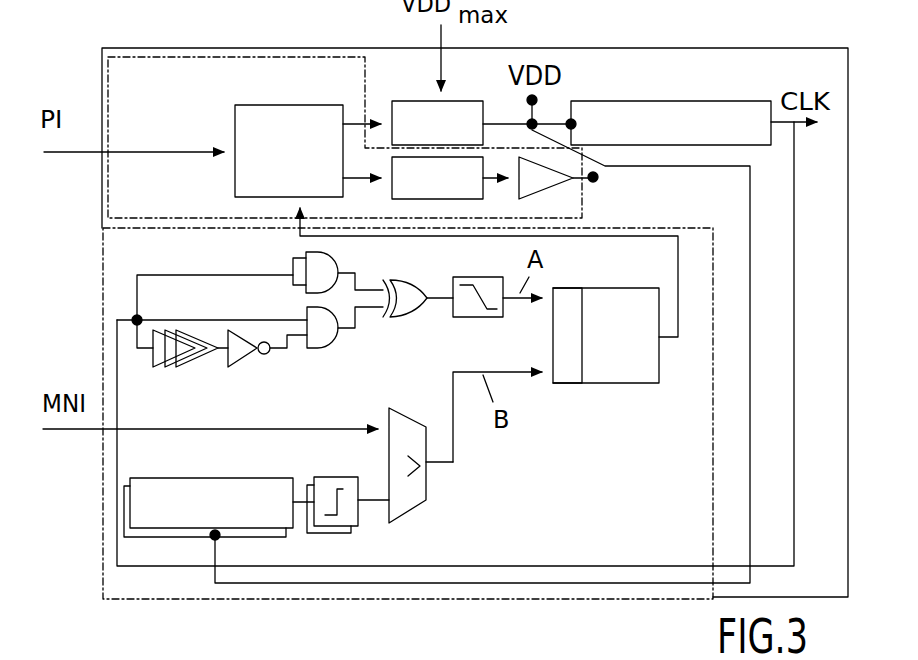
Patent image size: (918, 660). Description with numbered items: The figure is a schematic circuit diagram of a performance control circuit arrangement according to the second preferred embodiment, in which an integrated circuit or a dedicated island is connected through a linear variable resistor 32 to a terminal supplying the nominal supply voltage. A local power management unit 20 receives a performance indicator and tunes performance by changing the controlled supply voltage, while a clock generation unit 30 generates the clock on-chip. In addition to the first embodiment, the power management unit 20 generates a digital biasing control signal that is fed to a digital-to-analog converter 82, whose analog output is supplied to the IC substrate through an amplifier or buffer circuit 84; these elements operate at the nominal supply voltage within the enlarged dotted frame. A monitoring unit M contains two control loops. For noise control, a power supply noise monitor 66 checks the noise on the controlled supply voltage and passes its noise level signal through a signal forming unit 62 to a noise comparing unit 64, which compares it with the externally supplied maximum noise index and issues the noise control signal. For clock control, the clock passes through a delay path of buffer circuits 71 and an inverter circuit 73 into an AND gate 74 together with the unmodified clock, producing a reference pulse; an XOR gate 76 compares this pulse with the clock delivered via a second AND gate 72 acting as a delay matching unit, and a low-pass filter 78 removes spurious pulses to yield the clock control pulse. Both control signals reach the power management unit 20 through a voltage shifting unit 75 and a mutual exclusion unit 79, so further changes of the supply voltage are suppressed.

The power management unit 20 is at (265, 110).
The clock generation unit 30 is at (650, 100).
The linear variable resistor 32 is at (396, 100).
The digital-to-analog converter 82 is at (404, 193).
The amplifier or buffer circuit 84 is at (539, 182).
The signal forming unit 62 is at (327, 482).
The noise comparing unit 64 is at (418, 497).
The power supply noise monitor 66 is at (220, 480).
The buffer or amplifier circuits 71 is at (197, 353).
The second AND gate 72 is at (338, 265).
The inverter circuit 73 is at (243, 357).
The AND gate 74 is at (320, 337).
The voltage shifting unit 75 is at (568, 287).
The XOR gate 76 is at (410, 302).
The low-pass filter 78 is at (472, 312).
The mutual exclusion unit 79 is at (623, 292).
The monitoring unit M is at (712, 462).